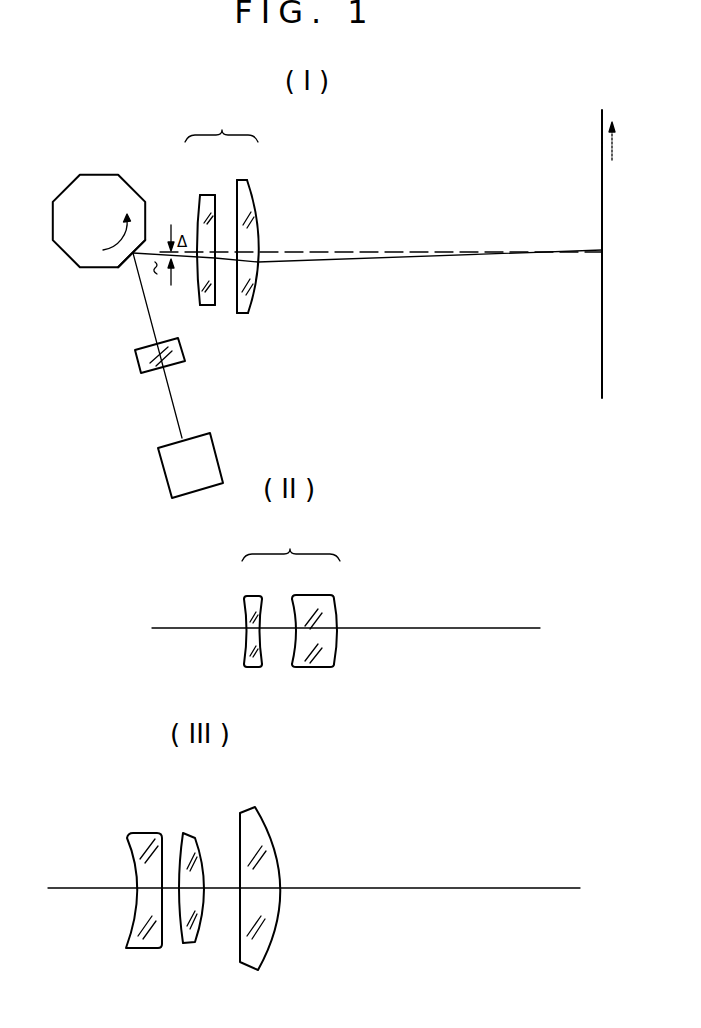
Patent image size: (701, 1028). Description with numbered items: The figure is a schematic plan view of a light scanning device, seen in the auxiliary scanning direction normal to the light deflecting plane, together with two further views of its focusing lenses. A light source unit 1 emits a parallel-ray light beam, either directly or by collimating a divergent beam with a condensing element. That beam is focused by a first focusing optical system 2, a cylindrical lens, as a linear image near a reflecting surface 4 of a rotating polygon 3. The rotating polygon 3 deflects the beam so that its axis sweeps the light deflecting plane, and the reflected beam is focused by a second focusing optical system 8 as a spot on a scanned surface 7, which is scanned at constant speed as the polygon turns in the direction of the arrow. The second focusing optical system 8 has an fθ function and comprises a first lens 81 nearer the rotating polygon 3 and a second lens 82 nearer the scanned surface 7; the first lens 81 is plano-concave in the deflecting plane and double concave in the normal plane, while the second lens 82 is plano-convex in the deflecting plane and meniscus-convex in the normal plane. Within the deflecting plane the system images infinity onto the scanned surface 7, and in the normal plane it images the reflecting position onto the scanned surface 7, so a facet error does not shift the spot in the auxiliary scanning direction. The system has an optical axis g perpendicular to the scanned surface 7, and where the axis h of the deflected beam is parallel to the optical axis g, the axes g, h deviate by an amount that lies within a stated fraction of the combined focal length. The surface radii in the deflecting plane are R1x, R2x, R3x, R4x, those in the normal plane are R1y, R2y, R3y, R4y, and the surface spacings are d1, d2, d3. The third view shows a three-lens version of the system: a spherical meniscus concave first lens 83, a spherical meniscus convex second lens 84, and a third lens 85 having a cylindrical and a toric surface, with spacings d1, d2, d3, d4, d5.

The light source unit 1 is at (170, 470).
The first focusing optical system 2 is at (142, 360).
The rotating polygon 3 is at (106, 186).
The reflecting surface 4 is at (126, 272).
The scanned surface 7 is at (603, 215).
The second focusing optical system 8 is at (282, 395).
The first lens 81 is at (232, 413).
The second lens 82 is at (320, 428).
The first lens 83 is at (145, 938).
The second lens 84 is at (180, 867).
The third lens 85 is at (240, 840).
The optical axis g is at (360, 250).
The axis of the light beam h is at (148, 279).
The radius of curvature of first lens surface in light deflecting plane R1x is at (197, 200).
The radius of curvature of second lens surface in light deflecting plane R2x is at (226, 250).
The radius of curvature of third lens surface in light deflecting plane R3x is at (240, 207).
The radius of curvature of fourth lens surface in light deflecting plane R4x is at (262, 236).
The radius of curvature of first lens surface in plane normal to light deflecting pl R1y is at (243, 612).
The radius of curvature of second lens surface in plane normal to light deflecting p R2y is at (263, 612).
The radius of curvature of third lens surface in plane normal to light deflecting pl R3y is at (297, 617).
The radius of curvature of fourth lens surface in plane normal to light deflecting p R4y is at (337, 617).
The first distance between lens surfaces d1 is at (221, 292).
The second distance between lens surfaces d2 is at (222, 252).
The third distance between lens surfaces d3 is at (249, 256).
The fourth distance between lens surfaces d4 is at (224, 886).
The fifth distance between lens surfaces d5 is at (262, 887).